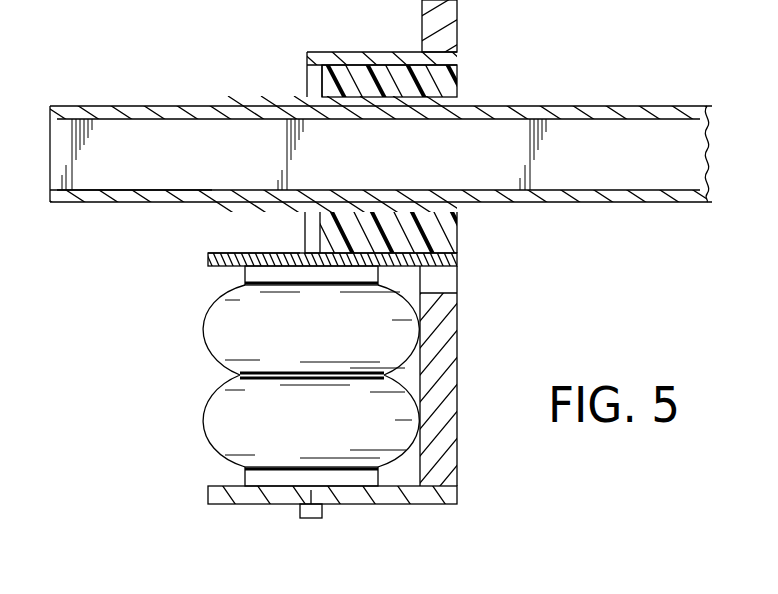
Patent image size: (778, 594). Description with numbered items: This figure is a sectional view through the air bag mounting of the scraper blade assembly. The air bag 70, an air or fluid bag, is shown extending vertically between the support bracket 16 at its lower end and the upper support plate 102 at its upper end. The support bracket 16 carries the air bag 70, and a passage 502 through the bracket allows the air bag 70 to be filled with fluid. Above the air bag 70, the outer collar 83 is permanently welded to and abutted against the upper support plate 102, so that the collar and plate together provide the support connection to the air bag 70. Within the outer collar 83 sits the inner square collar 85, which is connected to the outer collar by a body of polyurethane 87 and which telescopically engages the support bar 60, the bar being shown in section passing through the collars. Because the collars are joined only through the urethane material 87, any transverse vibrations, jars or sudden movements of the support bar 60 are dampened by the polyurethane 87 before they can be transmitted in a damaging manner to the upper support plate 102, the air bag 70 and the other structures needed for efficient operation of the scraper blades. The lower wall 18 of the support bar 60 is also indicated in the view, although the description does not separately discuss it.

The support bar 60 is at (72, 104).
The lower wall of tube 18 is at (93, 203).
The inner square collar 85 is at (224, 96).
The polyurethane 87 is at (453, 72).
The outer collar 83 is at (457, 258).
The upper support plate 102 is at (208, 258).
The air bag 70 is at (208, 344).
The support bracket 16 is at (208, 490).
The passage 502 is at (300, 507).